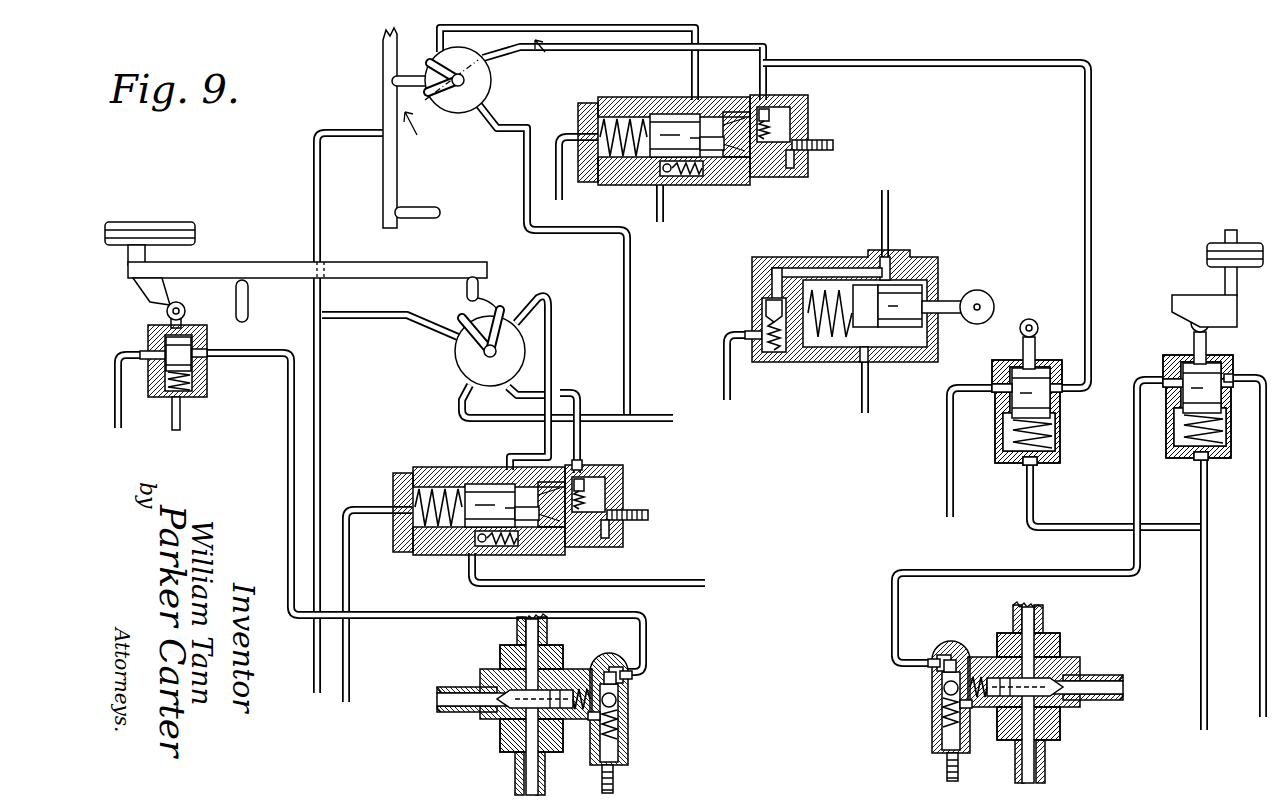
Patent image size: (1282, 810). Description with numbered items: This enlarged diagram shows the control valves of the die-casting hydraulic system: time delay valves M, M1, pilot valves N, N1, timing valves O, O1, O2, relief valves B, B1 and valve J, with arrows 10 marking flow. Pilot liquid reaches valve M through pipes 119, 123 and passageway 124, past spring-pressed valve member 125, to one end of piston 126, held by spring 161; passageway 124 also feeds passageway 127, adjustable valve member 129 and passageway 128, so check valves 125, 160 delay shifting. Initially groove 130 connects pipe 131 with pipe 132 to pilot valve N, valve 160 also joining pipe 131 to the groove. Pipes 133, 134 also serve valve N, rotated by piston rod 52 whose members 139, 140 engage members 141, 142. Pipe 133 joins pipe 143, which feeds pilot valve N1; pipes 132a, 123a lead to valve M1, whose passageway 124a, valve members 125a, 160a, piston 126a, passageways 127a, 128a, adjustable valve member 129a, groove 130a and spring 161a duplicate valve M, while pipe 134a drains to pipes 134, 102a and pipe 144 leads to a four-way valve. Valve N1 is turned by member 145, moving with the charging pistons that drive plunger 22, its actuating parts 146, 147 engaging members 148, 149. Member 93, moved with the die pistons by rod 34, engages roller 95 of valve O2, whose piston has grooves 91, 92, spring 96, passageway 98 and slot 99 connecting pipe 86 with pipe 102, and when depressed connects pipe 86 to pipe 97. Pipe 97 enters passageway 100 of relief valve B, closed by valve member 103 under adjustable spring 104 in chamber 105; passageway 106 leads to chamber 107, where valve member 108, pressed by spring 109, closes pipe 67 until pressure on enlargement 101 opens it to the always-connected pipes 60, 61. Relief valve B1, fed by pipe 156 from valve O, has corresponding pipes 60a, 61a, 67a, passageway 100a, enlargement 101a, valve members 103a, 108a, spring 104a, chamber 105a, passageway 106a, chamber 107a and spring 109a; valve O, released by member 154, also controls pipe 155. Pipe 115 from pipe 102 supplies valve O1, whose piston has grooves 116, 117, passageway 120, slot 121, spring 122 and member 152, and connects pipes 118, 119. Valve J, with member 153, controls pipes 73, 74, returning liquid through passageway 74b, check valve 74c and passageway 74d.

The flow direction arrow 10 is at (484, 102).
The plunger 22 is at (162, 224).
The rod 34 is at (1250, 244).
The piston rod 52 is at (380, 36).
The pipe 60 is at (1045, 758).
The power pipe 61 is at (1043, 615).
The pipe 67 is at (1110, 694).
The pipe 73 is at (860, 408).
The pipe 74 is at (889, 200).
The passageway 74b is at (842, 268).
The check valve 74c is at (760, 312).
The passageway 74d is at (822, 350).
The pipe 86 is at (1260, 535).
The groove 91 is at (1185, 375).
The groove 92 is at (1185, 405).
The member 93 is at (1192, 300).
The roller 95 is at (1212, 335).
The spring 96 is at (1215, 455).
The pipe 97 is at (907, 571).
The passageway 98 is at (1170, 445).
The slot 99 is at (1233, 380).
The passageway 100 is at (932, 678).
The enlargement 101 is at (1008, 636).
The pipe 102 is at (1202, 590).
The valve member 103 is at (944, 688).
The adjustable spring 104 is at (944, 732).
The chamber 105 is at (945, 702).
The passageway 106 is at (968, 710).
The chamber 107 is at (978, 676).
The valve member 108 is at (1045, 682).
The spring 109 is at (952, 660).
The pipe 115 is at (1090, 524).
The groove 116 is at (1030, 385).
The groove 117 is at (1046, 412).
The pipe 118 is at (946, 468).
The pipe 119 is at (1085, 235).
The passageway 120 is at (1005, 436).
The slot 121 is at (1005, 392).
The spring 122 is at (1027, 463).
The pipe 123 is at (665, 43).
The passageway 124 is at (768, 58).
The spring-pressed valve member 125 is at (790, 130).
The piston 126 is at (716, 160).
The passageway 127 is at (802, 118).
The passageway 128 is at (790, 158).
The adjustable valve member 129 is at (834, 145).
The elongated groove 130 is at (672, 122).
The pipe 131 is at (660, 224).
The pipe 132 is at (626, 32).
The pipe 133 is at (630, 315).
The pipe 134 is at (320, 172).
The member 139 is at (390, 80).
The member 140 is at (428, 208).
The member 141 is at (426, 62).
The member 142 is at (425, 92).
The pipe 143 is at (668, 414).
The pipe 144 is at (700, 580).
The member 145 is at (352, 264).
The actuating part 146 is at (246, 318).
The actuating part 147 is at (486, 298).
The member 148 is at (466, 288).
The member 149 is at (515, 300).
The member 152 is at (1025, 318).
The member 153 is at (978, 292).
The member 154 is at (170, 300).
The pipe 155 is at (122, 346).
The pipe 156 is at (646, 614).
The spring-pressed valve 160 is at (689, 178).
The spring 161 is at (582, 125).
The pipe 102a is at (320, 408).
The pipe 123a is at (572, 392).
The passageway 124a is at (583, 482).
The check valve 125a is at (612, 482).
The piston 126a is at (560, 540).
The passageway 127a is at (624, 500).
The passageway 128a is at (606, 526).
The adjustable valve member 129a is at (649, 516).
The elongated groove 130a is at (490, 500).
The pipe 132a is at (552, 349).
The pipe 134a is at (374, 319).
The check valve 160a is at (502, 548).
The spring 161a is at (410, 505).
The pipe 60a is at (517, 778).
The pipe 61a is at (517, 632).
The pipe 67a is at (452, 708).
The passageway 100a is at (630, 675).
The enlargement 101a is at (482, 690).
The valve member 103a is at (616, 700).
The adjustable spring 104a is at (614, 730).
The chamber 105a is at (616, 714).
The passageway 106a is at (600, 665).
The chamber 107a is at (582, 708).
The valve member 108a is at (495, 740).
The spring 109a is at (606, 675).
The time delay valve M is at (700, 110).
The time delay valve M1 is at (420, 472).
The pilot valve N is at (455, 112).
The pilot valve N1 is at (520, 345).
The valve J is at (935, 262).
The timing valve O is at (208, 377).
The timing valve O1 is at (1062, 430).
The timing valve O2 is at (1176, 458).
The relief valve B is at (1075, 658).
The relief valve B1 is at (485, 670).